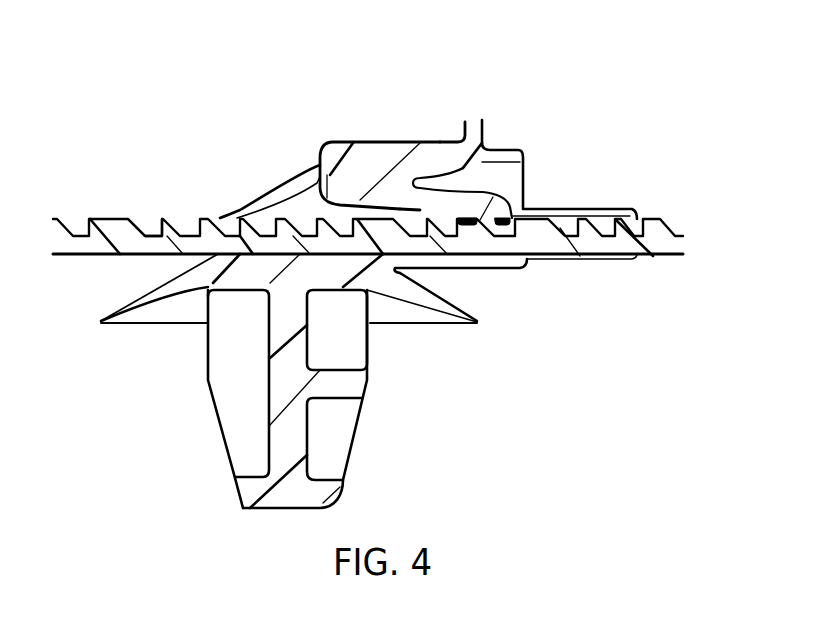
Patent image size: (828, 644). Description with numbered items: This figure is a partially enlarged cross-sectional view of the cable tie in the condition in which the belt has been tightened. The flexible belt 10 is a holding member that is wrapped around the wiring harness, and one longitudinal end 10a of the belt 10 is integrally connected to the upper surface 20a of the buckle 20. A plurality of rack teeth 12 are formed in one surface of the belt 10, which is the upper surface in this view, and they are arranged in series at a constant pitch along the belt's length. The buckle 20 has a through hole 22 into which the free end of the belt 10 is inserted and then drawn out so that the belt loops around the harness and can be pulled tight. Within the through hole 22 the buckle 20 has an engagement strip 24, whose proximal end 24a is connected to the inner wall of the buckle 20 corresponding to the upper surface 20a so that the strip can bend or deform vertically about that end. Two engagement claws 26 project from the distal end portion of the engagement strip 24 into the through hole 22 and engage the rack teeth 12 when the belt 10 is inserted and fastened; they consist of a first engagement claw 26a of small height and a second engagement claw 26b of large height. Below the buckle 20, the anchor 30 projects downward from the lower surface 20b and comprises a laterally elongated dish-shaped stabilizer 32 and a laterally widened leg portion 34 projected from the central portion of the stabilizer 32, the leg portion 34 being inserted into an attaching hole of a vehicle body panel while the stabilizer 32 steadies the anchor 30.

The belt 10 is at (665, 243).
The one longitudinal end of the belt 10a is at (487, 129).
The rack teeth 12 is at (145, 216).
The buckle 20 is at (368, 163).
The upper surface of the buckle 20a is at (389, 138).
The lower surface of the buckle 20b is at (441, 276).
The through hole 22 is at (321, 207).
The engagement strip 24 is at (483, 198).
The proximal end of the engagement strip 24a is at (421, 205).
The engagement claws 26 is at (526, 300).
The first engagement claw 26a is at (455, 225).
The second engagement claw 26b is at (516, 228).
The anchor 30 is at (370, 443).
The stabilizer 32 is at (140, 297).
The leg portion 34 is at (213, 440).